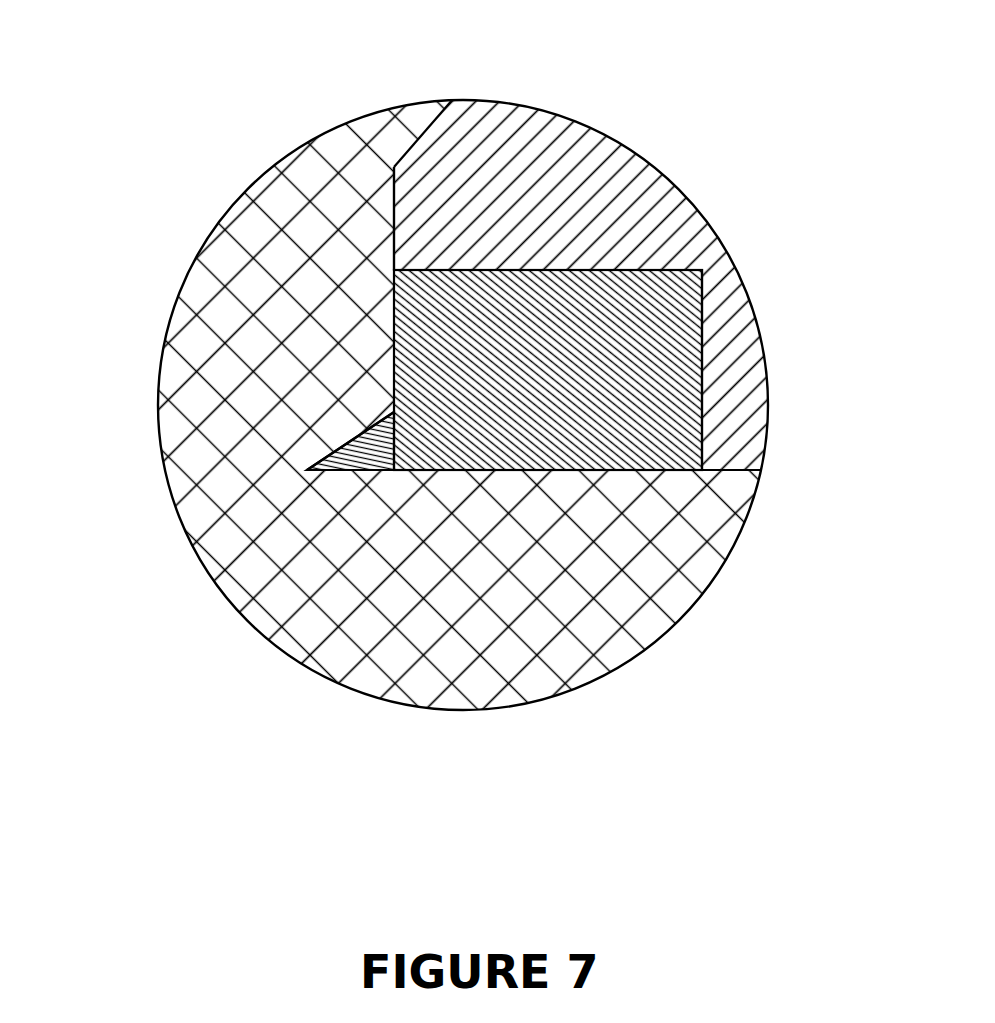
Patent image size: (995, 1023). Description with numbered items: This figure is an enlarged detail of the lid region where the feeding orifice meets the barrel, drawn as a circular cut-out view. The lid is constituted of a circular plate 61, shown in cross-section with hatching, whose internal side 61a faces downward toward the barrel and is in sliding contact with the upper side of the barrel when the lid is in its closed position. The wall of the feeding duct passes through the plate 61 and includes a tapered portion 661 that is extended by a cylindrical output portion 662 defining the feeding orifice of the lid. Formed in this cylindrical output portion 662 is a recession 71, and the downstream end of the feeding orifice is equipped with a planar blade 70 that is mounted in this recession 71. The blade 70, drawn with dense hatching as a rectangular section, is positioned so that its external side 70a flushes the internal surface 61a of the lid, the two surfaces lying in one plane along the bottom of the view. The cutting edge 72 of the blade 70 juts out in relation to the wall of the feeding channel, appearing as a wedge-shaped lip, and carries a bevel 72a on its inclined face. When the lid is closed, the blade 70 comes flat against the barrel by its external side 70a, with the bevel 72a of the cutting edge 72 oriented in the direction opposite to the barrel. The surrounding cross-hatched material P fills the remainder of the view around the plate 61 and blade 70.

The packing / gasket member (cross-hatched) P is at (237, 292).
The circular plate 61 is at (568, 152).
The tapered portion 661 is at (425, 132).
The cylindrical output portion 662 is at (388, 240).
The planar blade 70 is at (680, 360).
The recession 71 is at (647, 262).
The cutting edge 72 is at (335, 470).
The bevel 72a is at (352, 438).
The internal side 61a is at (738, 470).
The external side 70a is at (533, 470).